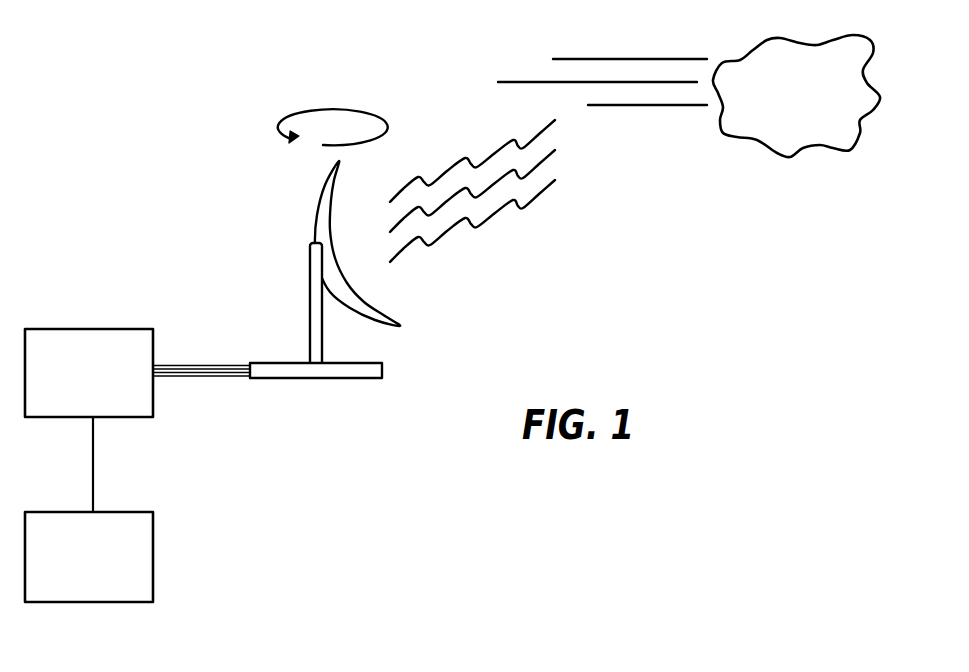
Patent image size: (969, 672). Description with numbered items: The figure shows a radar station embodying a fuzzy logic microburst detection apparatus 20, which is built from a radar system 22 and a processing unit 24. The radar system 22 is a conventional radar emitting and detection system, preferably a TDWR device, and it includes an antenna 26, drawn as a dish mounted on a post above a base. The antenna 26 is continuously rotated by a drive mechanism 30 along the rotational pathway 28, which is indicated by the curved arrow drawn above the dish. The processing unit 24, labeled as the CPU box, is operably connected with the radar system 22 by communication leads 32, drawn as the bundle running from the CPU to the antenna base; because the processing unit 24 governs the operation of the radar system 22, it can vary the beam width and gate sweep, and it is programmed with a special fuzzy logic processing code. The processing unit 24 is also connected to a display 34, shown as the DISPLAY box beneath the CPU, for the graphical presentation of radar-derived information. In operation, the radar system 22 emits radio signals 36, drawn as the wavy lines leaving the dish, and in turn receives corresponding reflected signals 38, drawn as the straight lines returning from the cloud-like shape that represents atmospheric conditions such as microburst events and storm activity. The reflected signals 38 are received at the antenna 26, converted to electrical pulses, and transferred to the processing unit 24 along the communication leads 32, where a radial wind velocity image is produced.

The fuzzy logic microburst detection apparatus 20 is at (341, 291).
The radar system 22 is at (313, 378).
The processing unit 24 is at (60, 328).
The antenna 26 is at (336, 243).
The pathway 28 is at (373, 112).
The drive mechanism 30 is at (310, 287).
The communication leads 32 is at (203, 378).
The display 34 is at (50, 510).
The radio signals 36 is at (497, 203).
The reflected signals 38 is at (665, 58).